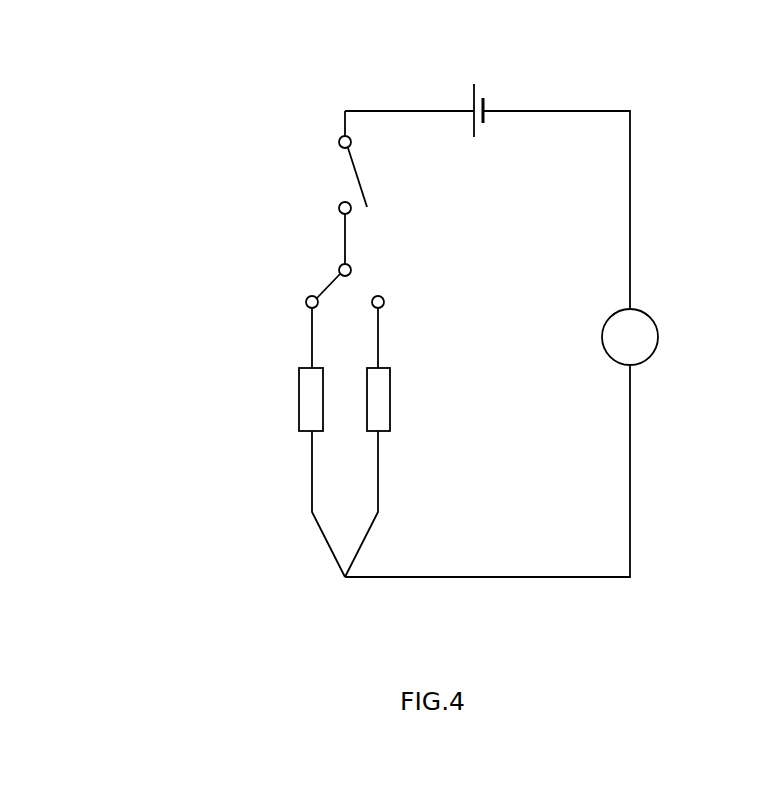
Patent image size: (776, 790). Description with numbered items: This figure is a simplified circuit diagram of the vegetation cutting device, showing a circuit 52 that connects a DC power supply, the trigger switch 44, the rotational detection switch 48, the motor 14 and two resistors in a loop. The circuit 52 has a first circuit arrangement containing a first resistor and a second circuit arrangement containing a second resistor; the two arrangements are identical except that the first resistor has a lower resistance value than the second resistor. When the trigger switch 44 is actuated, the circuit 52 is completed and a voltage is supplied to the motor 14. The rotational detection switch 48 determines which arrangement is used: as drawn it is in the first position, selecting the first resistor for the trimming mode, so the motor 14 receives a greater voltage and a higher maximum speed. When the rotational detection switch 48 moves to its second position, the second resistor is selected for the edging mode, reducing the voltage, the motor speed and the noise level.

The circuit 52 is at (253, 113).
The trigger switch 44 is at (355, 172).
The rotational detection switch 48 is at (328, 280).
The motor 14 is at (648, 317).